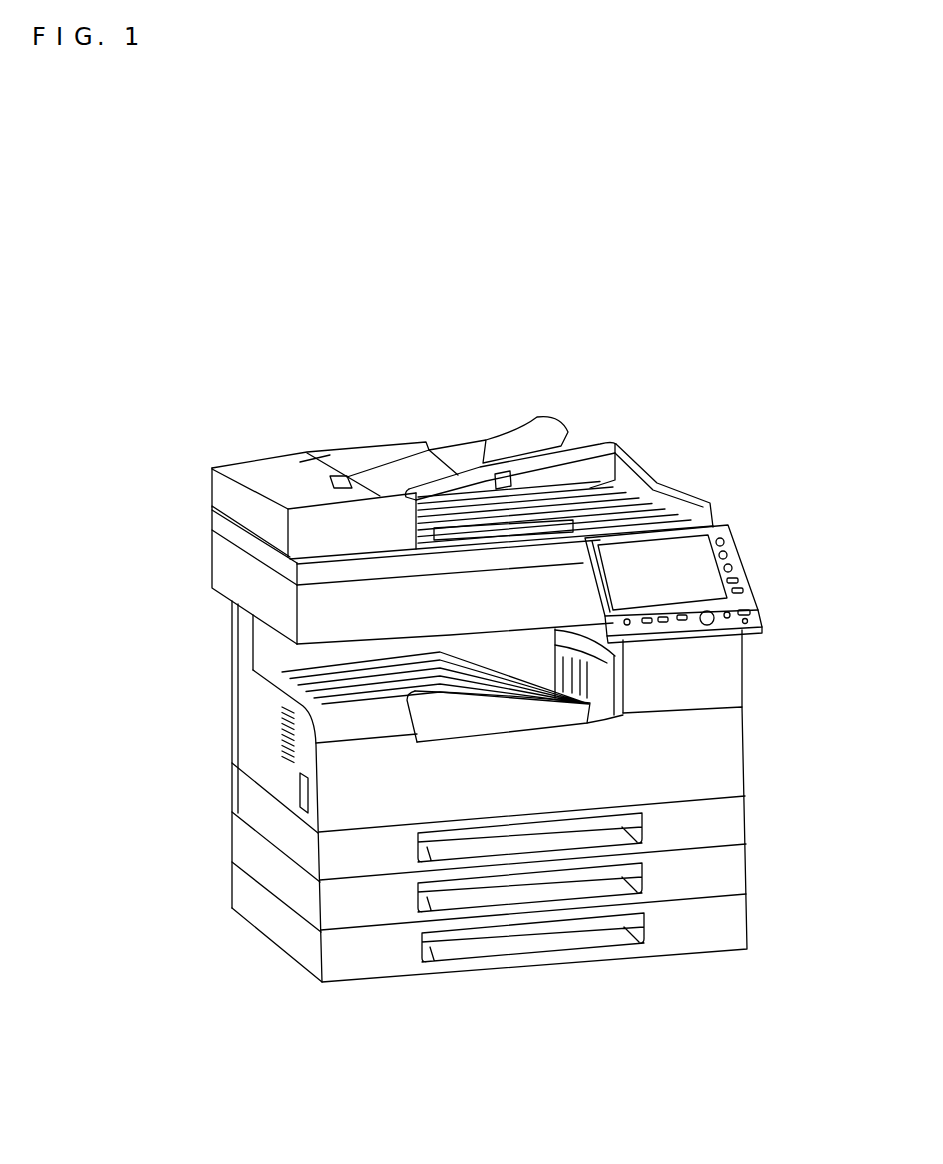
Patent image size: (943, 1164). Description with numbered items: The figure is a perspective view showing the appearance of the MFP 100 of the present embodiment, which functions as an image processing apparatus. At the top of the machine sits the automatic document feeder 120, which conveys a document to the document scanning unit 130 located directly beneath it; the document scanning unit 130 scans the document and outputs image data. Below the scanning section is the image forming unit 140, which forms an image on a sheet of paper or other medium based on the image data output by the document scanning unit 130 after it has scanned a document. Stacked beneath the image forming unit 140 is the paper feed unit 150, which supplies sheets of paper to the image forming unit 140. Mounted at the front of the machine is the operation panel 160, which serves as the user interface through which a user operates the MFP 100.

The MFP 100 is at (224, 335).
The automatic document feeder 120 is at (270, 458).
The document scanning unit 130 is at (216, 565).
The image forming unit 140 is at (238, 702).
The paper feed unit 150 is at (223, 757).
The operation panel 160 is at (663, 572).